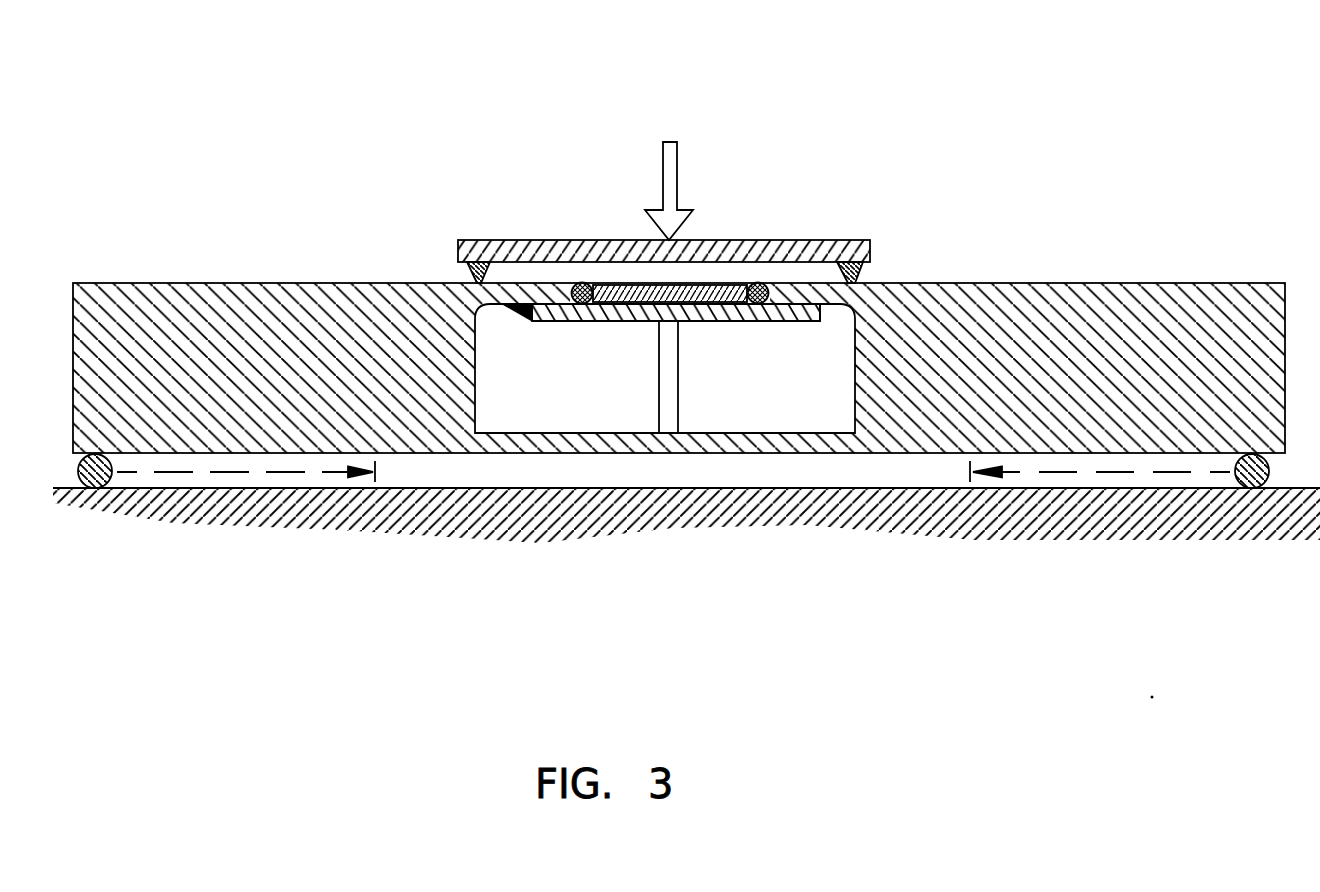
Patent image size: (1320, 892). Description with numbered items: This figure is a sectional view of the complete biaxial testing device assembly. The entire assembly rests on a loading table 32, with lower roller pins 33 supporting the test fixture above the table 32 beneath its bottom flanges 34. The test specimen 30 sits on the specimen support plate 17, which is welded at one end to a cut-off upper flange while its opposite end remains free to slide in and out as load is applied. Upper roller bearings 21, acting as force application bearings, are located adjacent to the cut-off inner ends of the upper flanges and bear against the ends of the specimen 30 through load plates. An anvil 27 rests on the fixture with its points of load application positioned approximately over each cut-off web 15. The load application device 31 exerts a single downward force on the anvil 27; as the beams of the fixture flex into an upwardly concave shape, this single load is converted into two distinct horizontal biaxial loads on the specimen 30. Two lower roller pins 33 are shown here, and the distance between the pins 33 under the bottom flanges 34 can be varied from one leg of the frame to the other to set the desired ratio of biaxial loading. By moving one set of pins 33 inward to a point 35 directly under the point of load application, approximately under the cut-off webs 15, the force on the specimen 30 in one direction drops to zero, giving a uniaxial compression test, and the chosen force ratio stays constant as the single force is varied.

The cut-off web 15 is at (680, 392).
The specimen support plate 17 is at (623, 323).
The upper roller bearings 21 is at (582, 283).
The anvil 27 is at (870, 240).
The specimen 30 is at (700, 283).
The load application device 31 is at (662, 157).
The loading table 32 is at (805, 490).
The lower roller pins 33 is at (98, 483).
The bottom flanges 34 is at (313, 453).
The point under the point of load application 35 is at (380, 477).